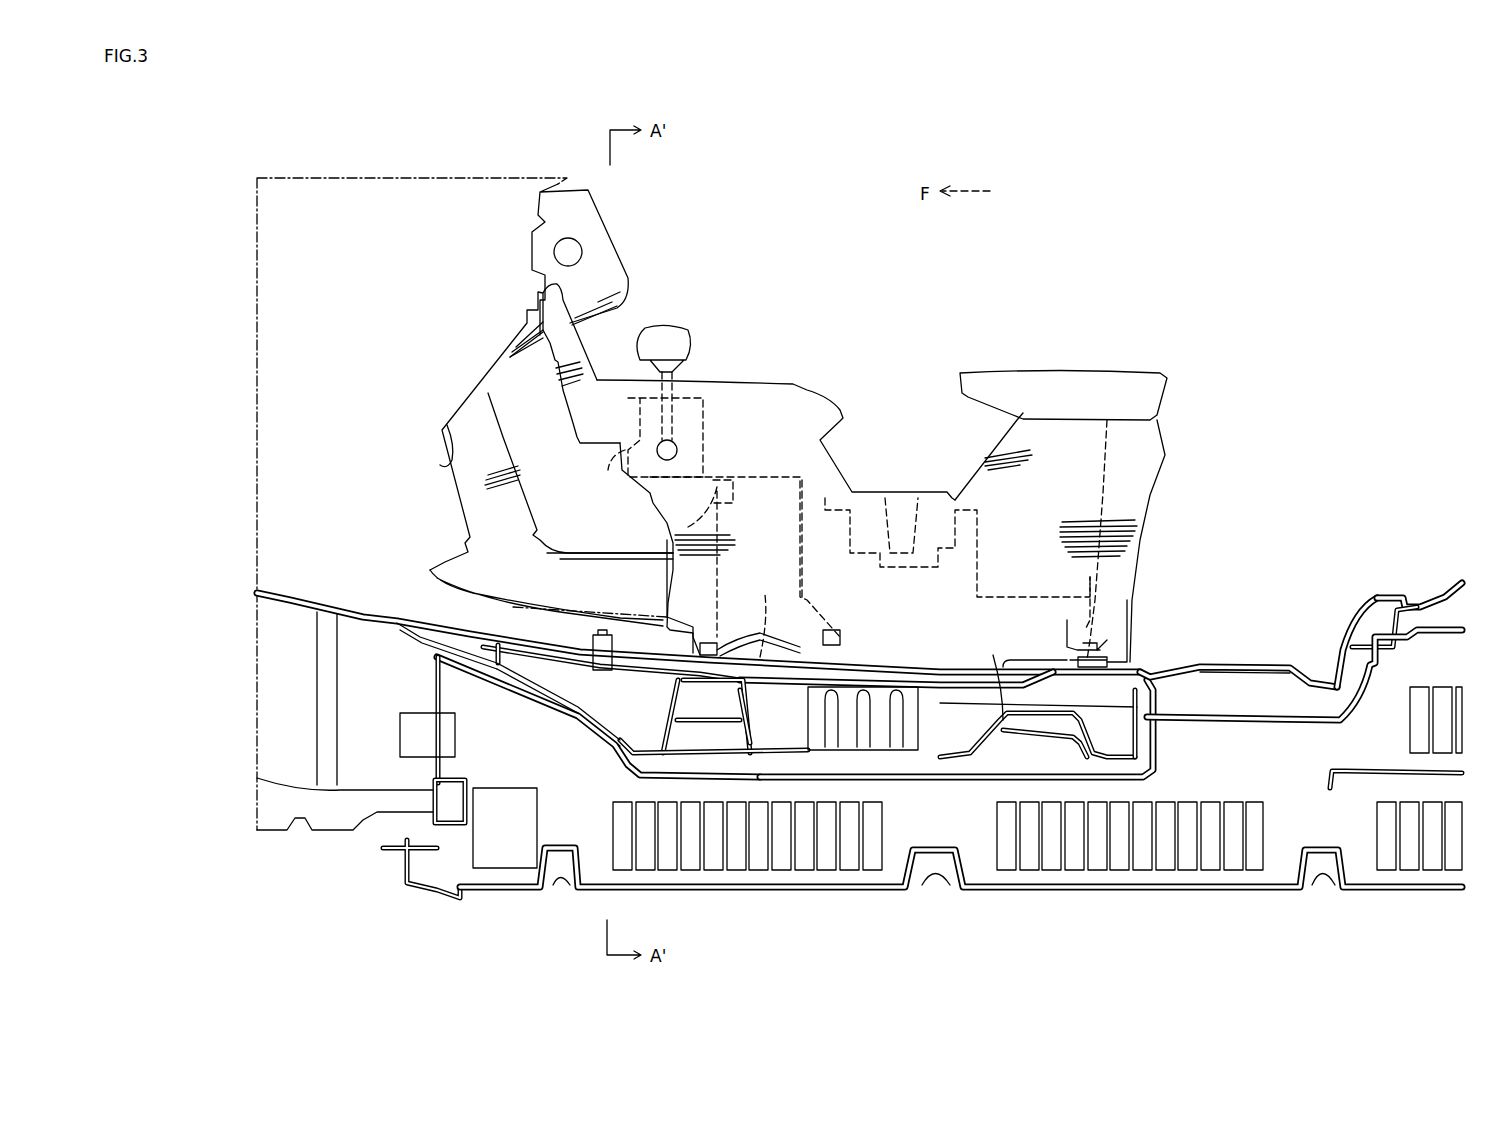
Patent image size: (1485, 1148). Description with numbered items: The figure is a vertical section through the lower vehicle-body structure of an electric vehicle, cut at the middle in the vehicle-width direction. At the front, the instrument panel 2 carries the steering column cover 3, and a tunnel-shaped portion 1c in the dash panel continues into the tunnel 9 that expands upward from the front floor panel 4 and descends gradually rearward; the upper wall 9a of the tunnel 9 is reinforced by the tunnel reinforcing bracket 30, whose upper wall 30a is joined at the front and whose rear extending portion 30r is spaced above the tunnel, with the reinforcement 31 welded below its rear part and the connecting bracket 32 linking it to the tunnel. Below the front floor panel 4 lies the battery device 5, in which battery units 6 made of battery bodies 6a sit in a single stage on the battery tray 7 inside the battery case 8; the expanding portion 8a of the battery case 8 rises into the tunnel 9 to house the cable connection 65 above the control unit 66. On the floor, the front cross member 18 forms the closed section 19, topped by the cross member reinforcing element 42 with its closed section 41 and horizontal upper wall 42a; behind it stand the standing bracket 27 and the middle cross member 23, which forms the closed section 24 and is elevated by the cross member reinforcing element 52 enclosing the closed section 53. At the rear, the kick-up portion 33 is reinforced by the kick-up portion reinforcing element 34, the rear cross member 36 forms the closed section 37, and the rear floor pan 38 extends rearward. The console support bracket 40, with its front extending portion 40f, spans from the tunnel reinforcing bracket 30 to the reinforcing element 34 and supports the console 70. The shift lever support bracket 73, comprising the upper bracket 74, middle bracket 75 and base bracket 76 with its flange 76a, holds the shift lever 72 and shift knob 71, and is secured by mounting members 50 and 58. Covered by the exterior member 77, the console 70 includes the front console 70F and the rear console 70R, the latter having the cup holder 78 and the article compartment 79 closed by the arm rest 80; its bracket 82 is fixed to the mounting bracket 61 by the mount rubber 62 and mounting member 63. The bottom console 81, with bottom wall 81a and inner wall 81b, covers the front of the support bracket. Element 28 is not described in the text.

The tunnel-shaped portion 1c is at (270, 600).
The instrument panel 2 is at (455, 447).
The steering column cover 3 is at (605, 228).
The front floor panel 4 is at (932, 772).
The battery device 5 is at (878, 900).
The battery unit 6 is at (600, 826).
The battery body 6a is at (800, 810).
The battery tray 7 is at (1010, 890).
The battery case 8 is at (1245, 722).
The expanding portion 8a is at (533, 708).
The tunnel 9 is at (463, 633).
The upper wall 9a is at (478, 655).
The front cross member 18 is at (665, 745).
The closed section 19 is at (700, 763).
The middle cross member 23 is at (1085, 737).
The closed section 24 is at (1020, 745).
The standing bracket 27 is at (930, 723).
The battery cell 28 is at (885, 722).
The tunnel reinforcing bracket 30 is at (406, 604).
The upper wall 30a is at (522, 640).
The rear extending portion 30r is at (578, 650).
The reinforcement of the tunnel reinforcing bracket 31 is at (578, 732).
The connecting bracket 32 is at (490, 660).
The kick-up portion 33 is at (1352, 600).
The kick-up portion reinforcing element 34 is at (1150, 675).
The rear cross member 36 is at (1395, 625).
The closed section 37 is at (1360, 635).
The rear floor pan 38 is at (1440, 598).
The console support bracket 40 is at (952, 664).
The front extending portion 40f is at (627, 668).
The closed section 41 is at (748, 740).
The cross member reinforcing element 42 is at (748, 715).
The upper wall 42a is at (765, 655).
The mounting member 50 is at (712, 645).
The cross member reinforcing element 52 is at (1155, 757).
The closed section 53 is at (993, 655).
The mounting member 58 is at (840, 635).
The mounting bracket 61 is at (1068, 660).
The mount rubber 62 is at (1090, 648).
The mounting member 63 is at (1085, 615).
The cable connection 65 is at (435, 690).
The control unit 66 is at (515, 790).
The console 70 is at (1182, 450).
The front console 70F is at (806, 383).
The rear console 70R is at (975, 460).
The shift knob 71 is at (692, 308).
The shift lever 72 is at (672, 425).
The shift lever support bracket 73 is at (820, 602).
The upper bracket 74 is at (609, 474).
The middle bracket 75 is at (745, 478).
The base bracket 76 is at (705, 530).
The flange 76a is at (778, 575).
The exterior member 77 is at (1135, 490).
The cup holder 78 is at (918, 508).
The article compartment 79 is at (1078, 562).
The arm rest 80 is at (1060, 385).
The bottom console 81 is at (478, 582).
The bottom wall 81a is at (565, 615).
The inner wall 81b is at (612, 560).
The bracket 82 is at (1060, 640).